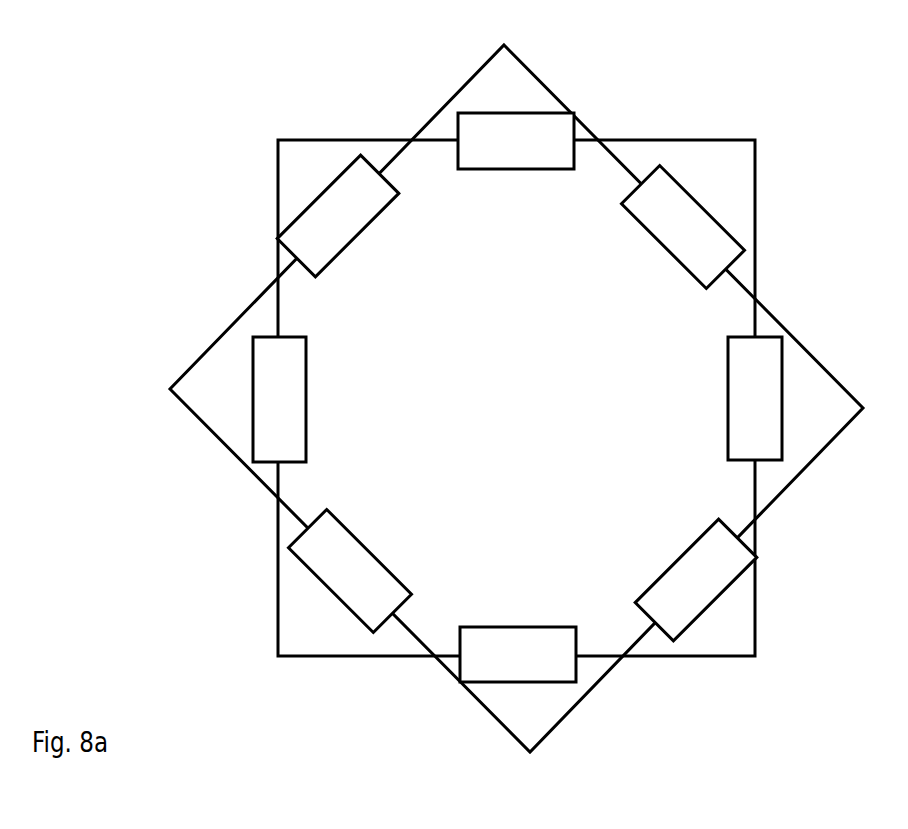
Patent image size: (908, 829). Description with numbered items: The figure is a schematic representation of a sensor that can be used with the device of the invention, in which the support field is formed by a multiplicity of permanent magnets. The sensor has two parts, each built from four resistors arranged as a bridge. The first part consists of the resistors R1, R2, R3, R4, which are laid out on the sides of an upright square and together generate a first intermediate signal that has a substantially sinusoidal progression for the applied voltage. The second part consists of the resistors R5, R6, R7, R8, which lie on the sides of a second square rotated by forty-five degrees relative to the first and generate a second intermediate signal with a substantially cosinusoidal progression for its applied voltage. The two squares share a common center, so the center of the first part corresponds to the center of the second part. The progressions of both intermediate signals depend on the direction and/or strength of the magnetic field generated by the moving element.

The resistor R1 is at (517, 146).
The resistor R2 is at (755, 401).
The resistor R3 is at (519, 652).
The resistor R4 is at (282, 401).
The resistor R5 is at (342, 219).
The resistor R6 is at (675, 229).
The resistor R7 is at (696, 590).
The resistor R8 is at (352, 571).